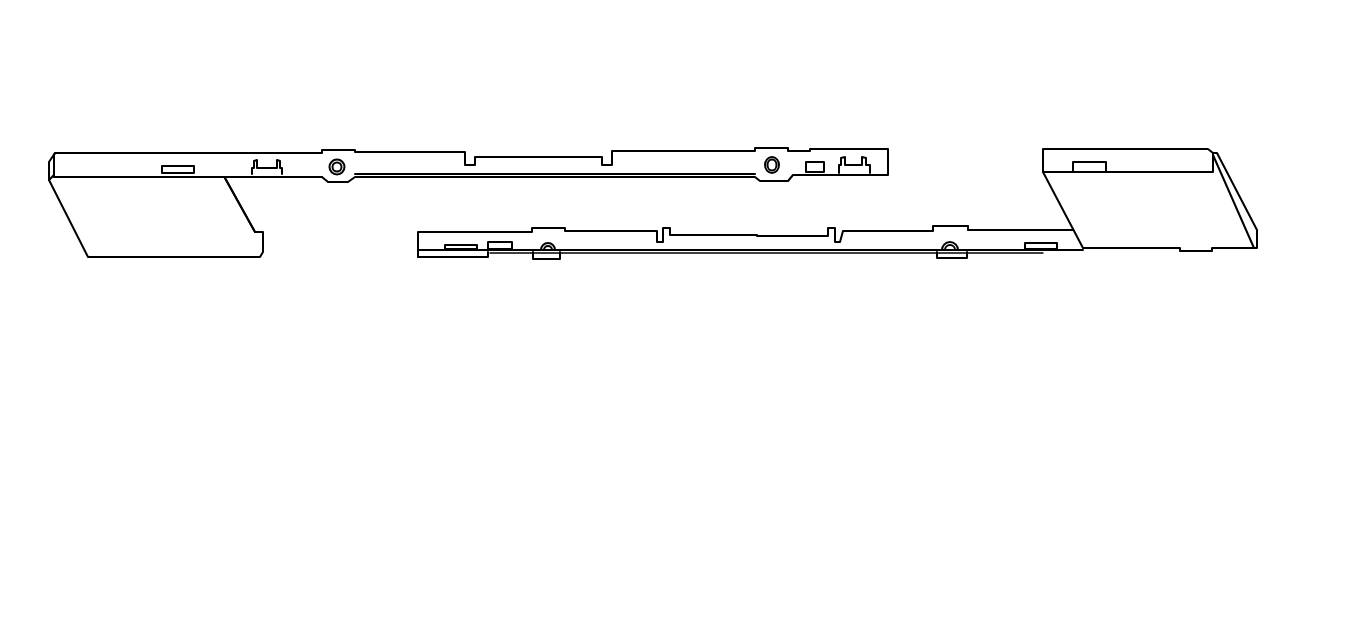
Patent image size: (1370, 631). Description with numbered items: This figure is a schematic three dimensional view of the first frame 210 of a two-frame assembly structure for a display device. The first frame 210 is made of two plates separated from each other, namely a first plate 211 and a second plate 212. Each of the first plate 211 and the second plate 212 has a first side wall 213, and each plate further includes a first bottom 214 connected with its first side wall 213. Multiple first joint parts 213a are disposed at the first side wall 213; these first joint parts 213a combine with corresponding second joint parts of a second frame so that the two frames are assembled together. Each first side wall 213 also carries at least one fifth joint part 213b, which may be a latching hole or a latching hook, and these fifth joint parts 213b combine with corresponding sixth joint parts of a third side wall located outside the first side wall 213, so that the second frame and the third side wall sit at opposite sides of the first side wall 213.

The first frame 210 is at (1303, 457).
The first plate 211 is at (428, 57).
The second plate 212 is at (1096, 165).
The first side wall 213 is at (303, 158).
The first joint part 213a is at (177, 169).
The fifth joint part 213b is at (853, 165).
The first bottom 214 is at (222, 213).